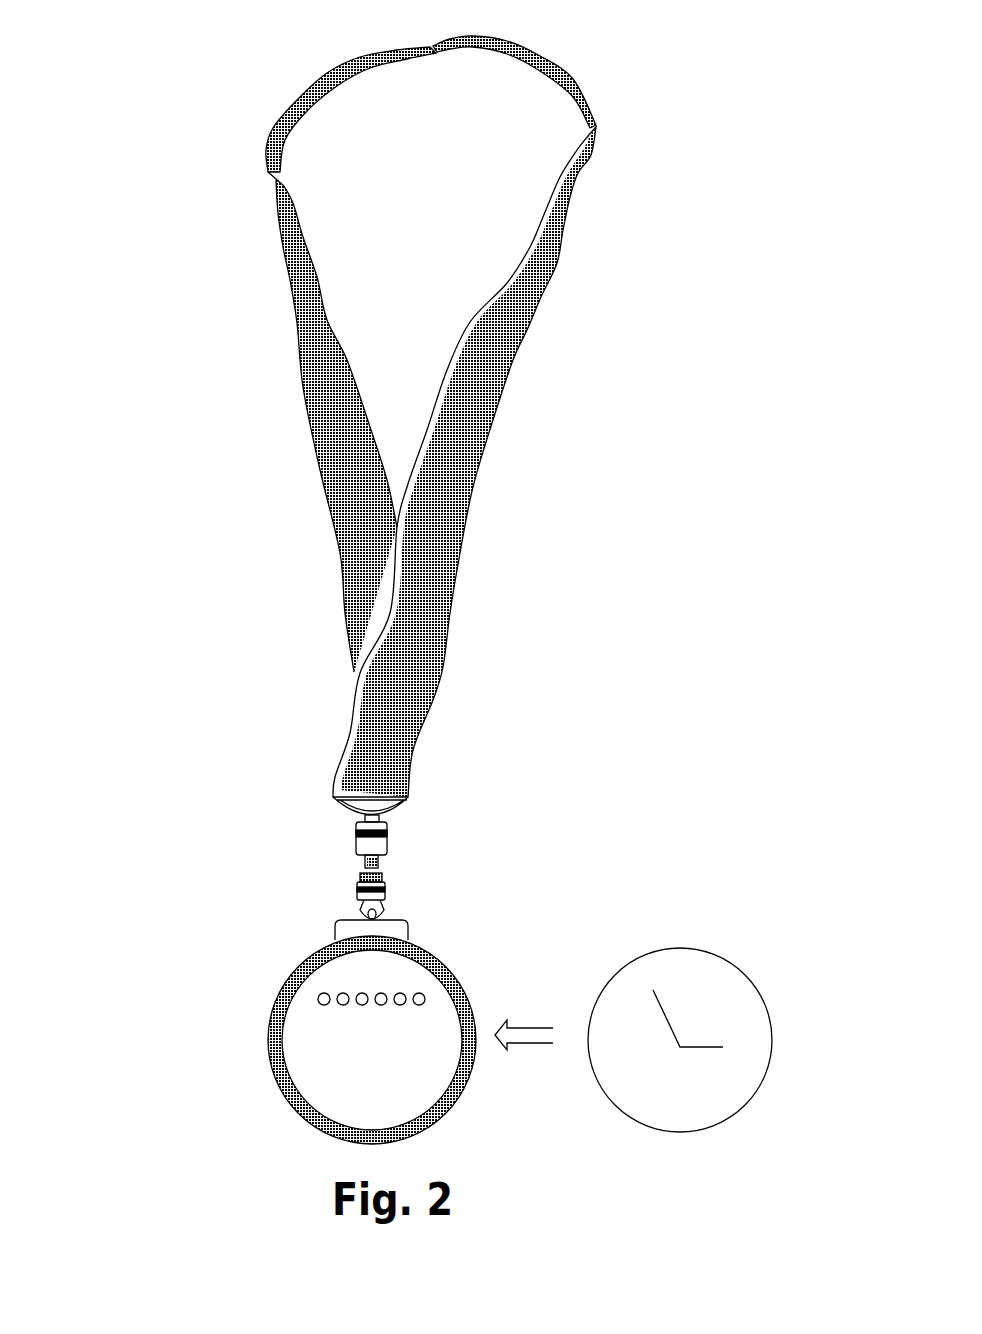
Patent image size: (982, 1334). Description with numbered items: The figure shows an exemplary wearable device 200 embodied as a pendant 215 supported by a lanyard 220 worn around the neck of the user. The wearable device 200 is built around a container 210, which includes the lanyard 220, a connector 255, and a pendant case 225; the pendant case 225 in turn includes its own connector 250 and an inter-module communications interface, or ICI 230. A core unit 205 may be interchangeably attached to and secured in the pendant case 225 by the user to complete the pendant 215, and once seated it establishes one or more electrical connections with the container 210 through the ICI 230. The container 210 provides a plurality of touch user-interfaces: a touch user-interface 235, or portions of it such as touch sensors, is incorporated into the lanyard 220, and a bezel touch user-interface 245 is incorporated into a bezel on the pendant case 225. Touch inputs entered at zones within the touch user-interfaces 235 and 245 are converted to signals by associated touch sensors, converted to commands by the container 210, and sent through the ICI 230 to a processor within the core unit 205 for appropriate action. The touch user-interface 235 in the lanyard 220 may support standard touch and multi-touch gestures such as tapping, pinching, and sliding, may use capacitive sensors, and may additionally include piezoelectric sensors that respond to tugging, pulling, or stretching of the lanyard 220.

The wearable device 200 is at (65, 21).
The core unit 205 is at (770, 1010).
The container 210 is at (332, 425).
The pendant 215 is at (393, 973).
The lanyard 220 is at (490, 428).
The pendant case 225 is at (268, 1037).
The inter-module communications interface (ICI) 230 is at (423, 993).
The touch user-interface 235 is at (435, 572).
The bezel touch user-interface 245 is at (296, 975).
The connector 250 is at (393, 887).
The connector 255 is at (357, 853).